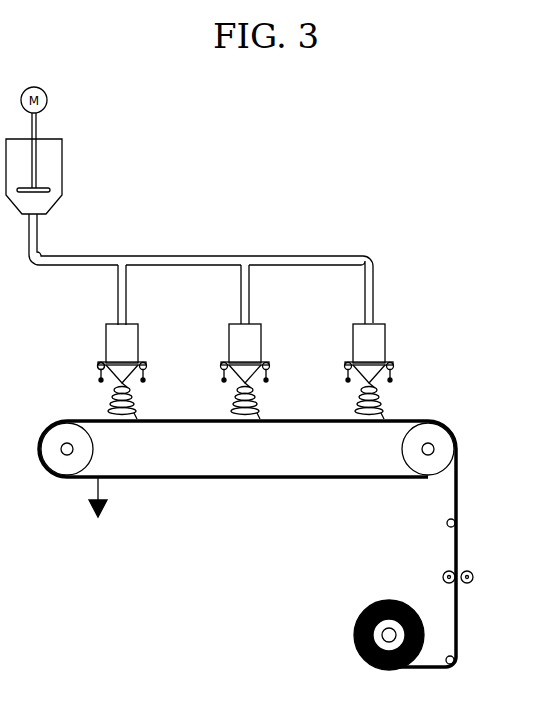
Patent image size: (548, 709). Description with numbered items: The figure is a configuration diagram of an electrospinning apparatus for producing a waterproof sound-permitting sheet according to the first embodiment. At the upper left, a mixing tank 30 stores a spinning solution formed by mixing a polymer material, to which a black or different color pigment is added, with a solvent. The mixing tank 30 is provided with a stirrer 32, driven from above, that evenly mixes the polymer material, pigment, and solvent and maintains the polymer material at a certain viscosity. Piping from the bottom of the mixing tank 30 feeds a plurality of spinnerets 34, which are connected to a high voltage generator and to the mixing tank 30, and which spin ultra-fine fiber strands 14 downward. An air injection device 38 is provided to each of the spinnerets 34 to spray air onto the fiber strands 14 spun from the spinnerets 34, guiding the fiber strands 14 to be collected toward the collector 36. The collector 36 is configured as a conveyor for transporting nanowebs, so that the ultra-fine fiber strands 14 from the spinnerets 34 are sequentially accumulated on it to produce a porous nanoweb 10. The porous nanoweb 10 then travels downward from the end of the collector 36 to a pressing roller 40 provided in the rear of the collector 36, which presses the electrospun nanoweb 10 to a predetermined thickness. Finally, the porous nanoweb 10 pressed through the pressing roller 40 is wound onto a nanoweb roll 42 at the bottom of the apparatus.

The porous nanoweb 10 is at (459, 490).
The ultra-fine fiber strands 14 is at (140, 398).
The mixing tank 30 is at (47, 160).
The stirrer 32 is at (50, 190).
The spinnerets 34 is at (130, 341).
The collector 36 is at (238, 478).
The air injection device 38 is at (97, 372).
The pressing roller 40 is at (473, 570).
The nanoweb roll 42 is at (385, 633).